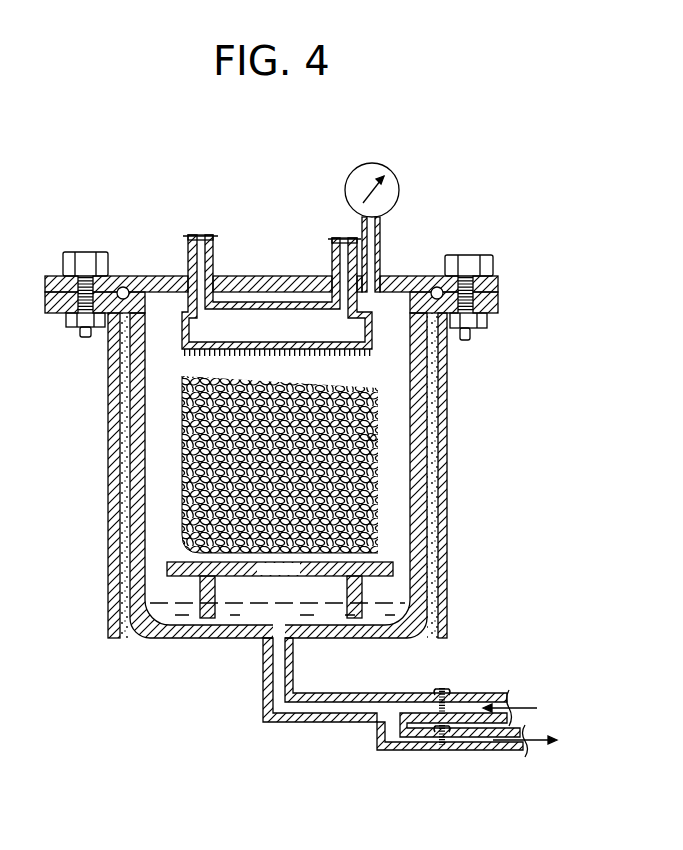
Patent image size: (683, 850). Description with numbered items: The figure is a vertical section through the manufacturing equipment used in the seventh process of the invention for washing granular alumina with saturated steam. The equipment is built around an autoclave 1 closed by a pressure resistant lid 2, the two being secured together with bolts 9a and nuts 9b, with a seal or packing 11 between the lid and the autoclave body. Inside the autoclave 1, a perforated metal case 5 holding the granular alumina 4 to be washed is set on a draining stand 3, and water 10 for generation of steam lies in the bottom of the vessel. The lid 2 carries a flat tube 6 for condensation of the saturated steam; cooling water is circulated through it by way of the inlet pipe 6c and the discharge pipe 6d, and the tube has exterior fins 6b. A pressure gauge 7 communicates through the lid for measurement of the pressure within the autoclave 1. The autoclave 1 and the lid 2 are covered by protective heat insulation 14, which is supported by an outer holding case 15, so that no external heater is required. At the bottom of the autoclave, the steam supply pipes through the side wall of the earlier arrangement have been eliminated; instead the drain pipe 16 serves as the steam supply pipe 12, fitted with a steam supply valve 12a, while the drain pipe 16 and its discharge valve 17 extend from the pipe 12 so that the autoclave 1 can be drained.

The autoclave 1 is at (418, 500).
The pressure resistant lid 2 is at (131, 278).
The draining stand 3 is at (393, 570).
The granular alumina 4 is at (373, 398).
The perforated metal case 5 is at (378, 437).
The flat tube 6 is at (250, 317).
The exterior fins 6b is at (182, 355).
The inlet pipe 6c is at (200, 240).
The discharge pipe 6d is at (338, 236).
The pressure gauge 7 is at (393, 176).
The bolts 9a is at (485, 263).
The nuts 9b is at (483, 322).
The water 10 is at (185, 615).
The seal or packing 11 is at (434, 288).
The steam supply pipe 12 is at (338, 693).
The steam supply valve 12a is at (445, 688).
The protective heat insulation 14 is at (125, 415).
The outer holding case 15 is at (112, 500).
The drain pipe 16 is at (413, 750).
The discharge valve 17 is at (442, 748).